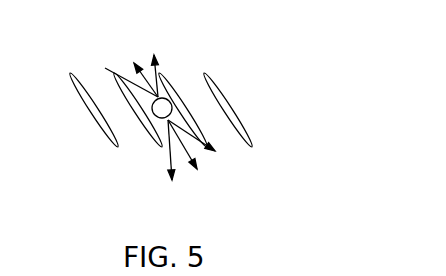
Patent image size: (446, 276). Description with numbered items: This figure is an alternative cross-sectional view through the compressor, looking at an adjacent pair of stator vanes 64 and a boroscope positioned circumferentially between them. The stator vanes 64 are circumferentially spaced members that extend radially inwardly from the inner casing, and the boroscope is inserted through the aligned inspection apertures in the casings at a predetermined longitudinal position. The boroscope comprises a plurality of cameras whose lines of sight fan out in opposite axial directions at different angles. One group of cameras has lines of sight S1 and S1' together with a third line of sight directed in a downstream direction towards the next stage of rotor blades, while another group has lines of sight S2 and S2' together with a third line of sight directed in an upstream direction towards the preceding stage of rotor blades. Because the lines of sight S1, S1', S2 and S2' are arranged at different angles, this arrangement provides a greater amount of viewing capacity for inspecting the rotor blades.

The stator vanes 64 is at (198, 119).
The line of sight S2 is at (132, 55).
The line of sight S2' is at (189, 54).
The line of sight S1 is at (179, 173).
The line of sight S1' is at (227, 164).